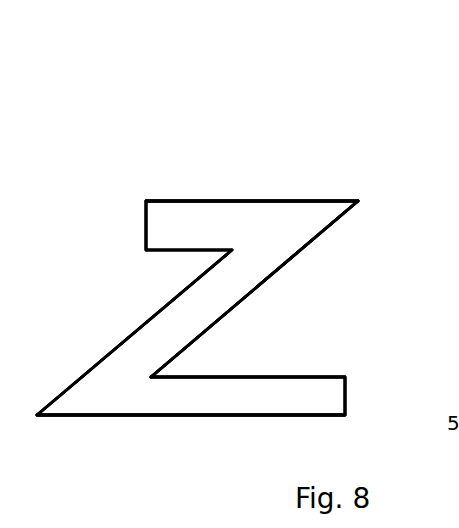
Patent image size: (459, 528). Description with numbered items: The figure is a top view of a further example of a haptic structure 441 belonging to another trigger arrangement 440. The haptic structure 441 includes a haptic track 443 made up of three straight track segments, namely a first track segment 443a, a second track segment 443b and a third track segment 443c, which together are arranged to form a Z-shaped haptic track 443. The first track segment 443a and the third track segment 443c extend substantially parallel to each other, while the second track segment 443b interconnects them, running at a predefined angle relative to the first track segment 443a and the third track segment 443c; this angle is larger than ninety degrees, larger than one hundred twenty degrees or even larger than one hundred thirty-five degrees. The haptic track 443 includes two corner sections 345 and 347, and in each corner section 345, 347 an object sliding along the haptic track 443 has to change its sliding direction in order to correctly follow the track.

The trigger arrangement 440 is at (183, 108).
The haptic structure 441 is at (322, 172).
The haptic track 443 is at (238, 193).
The first track segment 443a is at (181, 219).
The second track segment 443b is at (203, 303).
The third track segment 443c is at (217, 403).
The corner section 345 is at (322, 213).
The corner section 347 is at (76, 408).